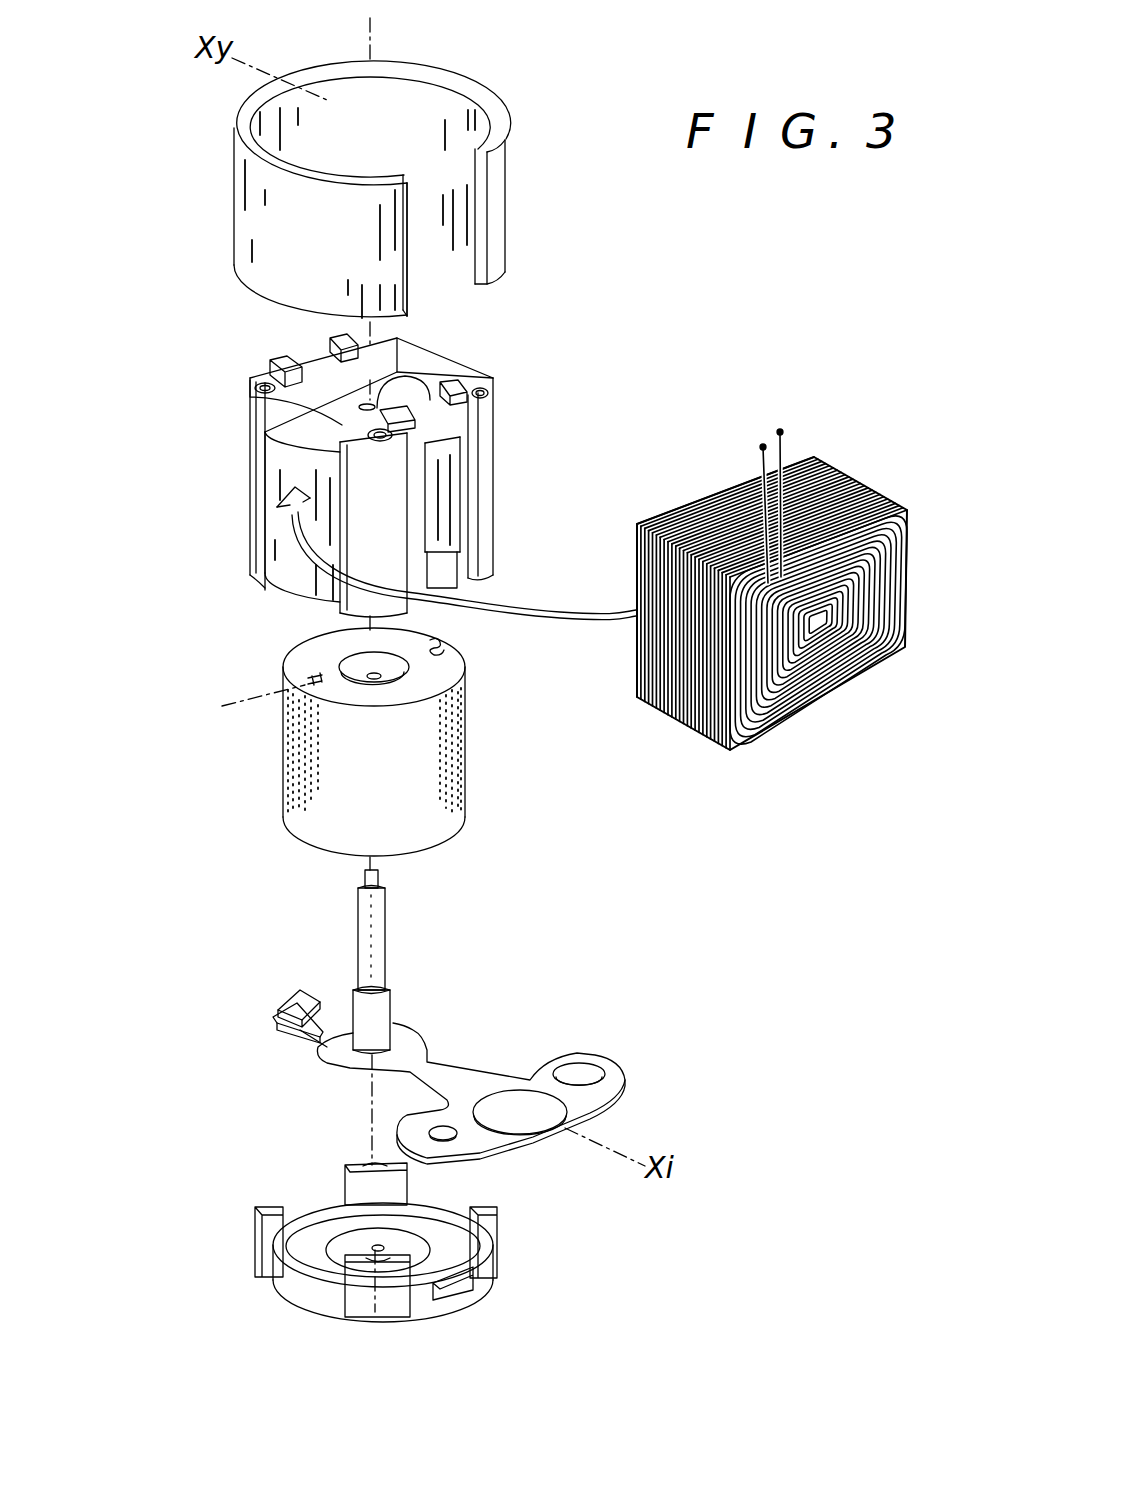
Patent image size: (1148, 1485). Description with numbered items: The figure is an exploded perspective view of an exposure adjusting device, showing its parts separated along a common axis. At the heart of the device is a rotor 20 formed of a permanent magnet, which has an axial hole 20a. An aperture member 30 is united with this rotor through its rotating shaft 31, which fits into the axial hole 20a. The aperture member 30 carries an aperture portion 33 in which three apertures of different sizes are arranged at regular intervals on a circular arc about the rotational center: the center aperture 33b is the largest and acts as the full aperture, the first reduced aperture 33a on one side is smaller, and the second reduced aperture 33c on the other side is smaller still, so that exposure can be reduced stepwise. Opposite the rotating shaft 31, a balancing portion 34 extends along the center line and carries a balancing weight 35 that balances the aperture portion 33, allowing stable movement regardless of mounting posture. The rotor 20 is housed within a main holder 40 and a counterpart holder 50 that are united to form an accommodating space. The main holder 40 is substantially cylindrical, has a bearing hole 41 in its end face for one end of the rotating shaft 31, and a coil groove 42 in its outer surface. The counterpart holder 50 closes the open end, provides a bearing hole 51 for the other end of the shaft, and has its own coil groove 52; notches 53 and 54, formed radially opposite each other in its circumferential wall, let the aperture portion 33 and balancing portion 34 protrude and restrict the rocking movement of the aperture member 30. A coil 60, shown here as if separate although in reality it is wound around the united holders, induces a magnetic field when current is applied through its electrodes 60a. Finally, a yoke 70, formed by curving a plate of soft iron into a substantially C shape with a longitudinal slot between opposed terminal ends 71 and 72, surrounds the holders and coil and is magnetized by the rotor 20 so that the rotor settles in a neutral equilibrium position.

The rotor 20 is at (371, 742).
The axial hole 20a is at (406, 664).
The aperture member 30 is at (447, 1038).
The rotating shaft 31 is at (380, 942).
The aperture portion 33 is at (527, 1089).
The first reduced aperture 33a is at (580, 1062).
The center aperture 33b is at (527, 1078).
The second reduced aperture 33c is at (458, 1133).
The balancing portion 34 is at (313, 1033).
The balancing weight 35 is at (300, 995).
The main holder 40 is at (379, 471).
The bearing hole 41 is at (372, 405).
The coil groove 42 is at (305, 427).
The counterpart holder 50 is at (347, 1222).
The bearing hole 51 is at (375, 1247).
The coil groove 52 is at (330, 1285).
The notch 53 is at (498, 1250).
The notch 54 is at (348, 1182).
The coil 60 is at (794, 552).
The electrode 60a is at (763, 447).
The yoke 70 is at (256, 222).
The terminal end 71 is at (409, 284).
The terminal end 72 is at (488, 222).